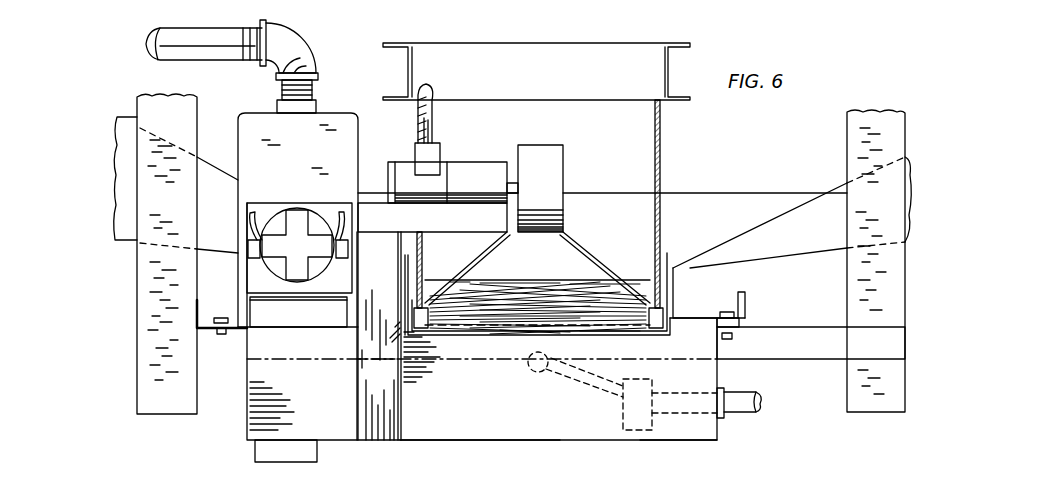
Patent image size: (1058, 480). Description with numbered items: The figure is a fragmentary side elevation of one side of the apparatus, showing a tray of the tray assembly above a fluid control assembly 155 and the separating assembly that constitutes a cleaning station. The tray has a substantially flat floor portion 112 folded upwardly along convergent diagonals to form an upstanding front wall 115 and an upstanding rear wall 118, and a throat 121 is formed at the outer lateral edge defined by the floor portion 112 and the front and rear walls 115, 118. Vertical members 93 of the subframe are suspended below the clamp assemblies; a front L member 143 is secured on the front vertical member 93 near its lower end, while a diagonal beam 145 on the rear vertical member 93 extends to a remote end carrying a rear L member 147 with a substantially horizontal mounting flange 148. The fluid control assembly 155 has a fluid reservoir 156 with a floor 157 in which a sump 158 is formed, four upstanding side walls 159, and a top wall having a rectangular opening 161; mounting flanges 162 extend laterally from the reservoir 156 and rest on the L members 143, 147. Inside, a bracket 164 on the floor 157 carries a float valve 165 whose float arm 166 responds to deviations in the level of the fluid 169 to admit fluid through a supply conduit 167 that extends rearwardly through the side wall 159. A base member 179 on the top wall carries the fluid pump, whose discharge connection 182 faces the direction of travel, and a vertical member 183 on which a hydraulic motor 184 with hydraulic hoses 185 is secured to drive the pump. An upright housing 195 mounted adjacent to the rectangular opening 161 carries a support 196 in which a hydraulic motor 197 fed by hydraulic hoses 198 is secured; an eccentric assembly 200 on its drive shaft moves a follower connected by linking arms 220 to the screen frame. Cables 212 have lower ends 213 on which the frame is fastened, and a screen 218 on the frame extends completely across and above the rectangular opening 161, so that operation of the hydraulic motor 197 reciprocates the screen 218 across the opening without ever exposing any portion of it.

The vertical member 93 is at (150, 286).
The floor portion 112 is at (622, 233).
The front wall 115 is at (122, 188).
The rear wall 118 is at (822, 247).
The throat 121 is at (522, 281).
The front L member 143 is at (197, 306).
The diagonal beam 145 is at (823, 351).
The rear L member 147 is at (746, 303).
The mounting flange 148 is at (733, 326).
The fluid control assembly 155 is at (567, 445).
The fluid reservoir 156 is at (681, 441).
The floor 157 is at (472, 441).
The sump 158 is at (318, 456).
The side wall 159 is at (485, 418).
The rectangular opening 161 is at (394, 330).
The mounting flange 162 is at (224, 317).
The bracket 164 is at (650, 432).
The float valve 165 is at (622, 405).
The float arm 166 is at (594, 388).
The supply conduit 167 is at (745, 412).
The fluid 169 is at (529, 360).
The base member 179 is at (278, 298).
The discharge connection 182 is at (290, 40).
The vertical member 183 is at (303, 212).
The hydraulic motor 184 is at (288, 222).
The hydraulic hoses 185 is at (252, 233).
The upright housing 195 is at (396, 283).
The support 196 is at (458, 227).
The hydraulic motor 197 is at (491, 196).
The hydraulic hoses 198 is at (435, 119).
The eccentric assembly 200 is at (556, 204).
The cable 212 is at (423, 253).
The lower ends 213 is at (429, 305).
The screen 218 is at (538, 308).
The linking arms 220 is at (481, 246).